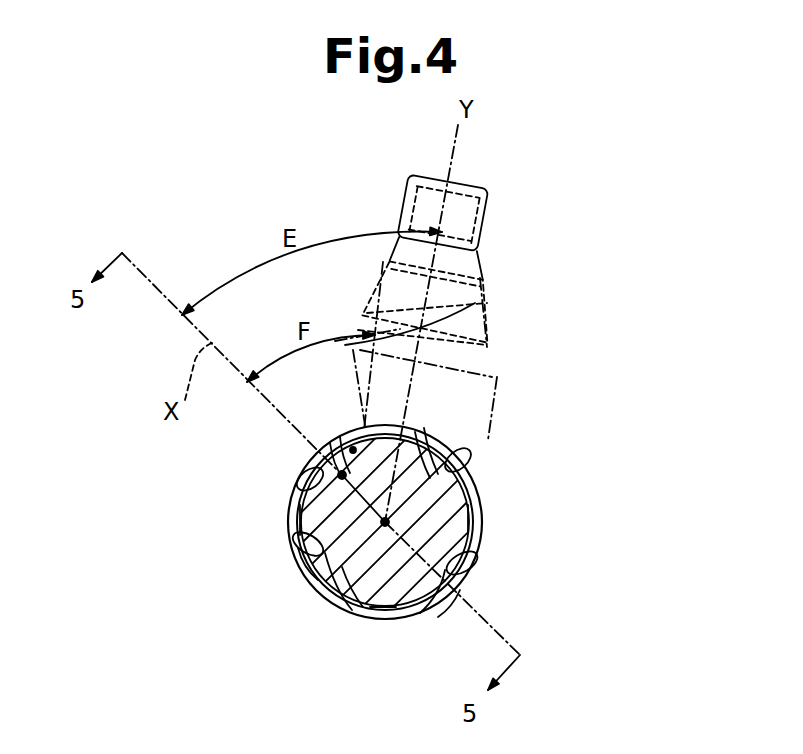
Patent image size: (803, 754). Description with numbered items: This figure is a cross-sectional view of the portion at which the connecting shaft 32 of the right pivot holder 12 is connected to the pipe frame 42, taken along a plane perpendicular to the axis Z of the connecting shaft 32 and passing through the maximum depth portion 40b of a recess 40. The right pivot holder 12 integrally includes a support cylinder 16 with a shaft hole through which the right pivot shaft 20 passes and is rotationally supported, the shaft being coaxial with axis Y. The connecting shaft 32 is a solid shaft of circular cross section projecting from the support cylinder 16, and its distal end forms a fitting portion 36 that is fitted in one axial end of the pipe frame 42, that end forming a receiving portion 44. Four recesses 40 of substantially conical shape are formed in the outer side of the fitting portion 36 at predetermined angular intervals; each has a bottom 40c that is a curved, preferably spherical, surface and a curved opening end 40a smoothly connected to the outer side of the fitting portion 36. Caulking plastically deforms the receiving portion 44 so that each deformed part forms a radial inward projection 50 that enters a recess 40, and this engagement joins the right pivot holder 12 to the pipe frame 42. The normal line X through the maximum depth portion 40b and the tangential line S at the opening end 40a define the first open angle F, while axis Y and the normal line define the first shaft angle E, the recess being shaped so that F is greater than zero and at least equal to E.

The right pivot holder 12 is at (580, 392).
The support cylinder 16 is at (493, 368).
The right pivot shaft 20 is at (497, 212).
The connecting shaft 32 is at (362, 617).
The fitting portion 36 is at (485, 512).
The recess 40 is at (462, 462).
The opening end 40a is at (338, 440).
The maximum depth portion 40b is at (312, 470).
The bottom 40c is at (437, 428).
The pipe frame 42 is at (298, 560).
The receiving portion 44 is at (480, 530).
The radial inward projection 50 is at (300, 520).
The tangential line S is at (485, 306).
The axis of the connecting shaft Z is at (385, 522).